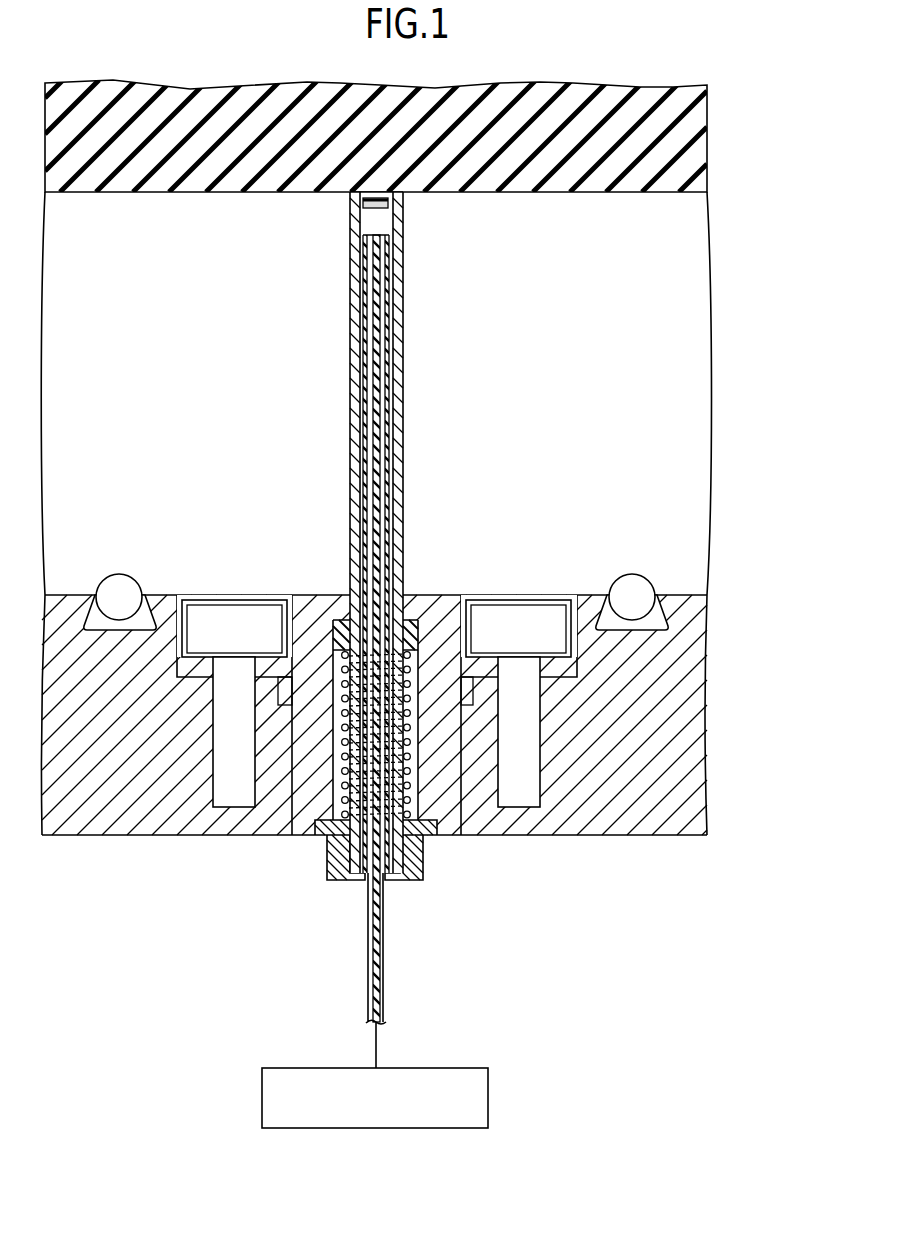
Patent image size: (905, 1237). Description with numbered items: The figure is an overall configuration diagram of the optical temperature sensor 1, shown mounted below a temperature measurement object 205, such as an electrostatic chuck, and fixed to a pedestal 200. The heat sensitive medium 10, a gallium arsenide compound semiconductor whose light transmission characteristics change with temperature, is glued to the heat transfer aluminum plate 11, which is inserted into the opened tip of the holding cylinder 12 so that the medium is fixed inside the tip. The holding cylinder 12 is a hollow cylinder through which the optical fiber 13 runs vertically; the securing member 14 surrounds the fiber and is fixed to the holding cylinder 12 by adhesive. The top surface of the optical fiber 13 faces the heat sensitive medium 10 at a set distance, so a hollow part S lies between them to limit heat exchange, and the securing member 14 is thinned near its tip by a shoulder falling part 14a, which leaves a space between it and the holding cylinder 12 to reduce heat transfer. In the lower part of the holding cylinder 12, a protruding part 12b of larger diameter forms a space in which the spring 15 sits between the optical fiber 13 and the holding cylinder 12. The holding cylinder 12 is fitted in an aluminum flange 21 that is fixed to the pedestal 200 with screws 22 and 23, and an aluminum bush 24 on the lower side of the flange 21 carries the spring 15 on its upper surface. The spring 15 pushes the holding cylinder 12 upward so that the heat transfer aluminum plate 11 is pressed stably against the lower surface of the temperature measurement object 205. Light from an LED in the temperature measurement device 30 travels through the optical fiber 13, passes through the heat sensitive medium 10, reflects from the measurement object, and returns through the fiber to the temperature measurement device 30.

The optical temperature sensor 1 is at (357, 630).
The heat sensitive medium 10 is at (391, 630).
The heat transfer aluminum plate 11 is at (358, 196).
The holding cylinder 12 is at (403, 384).
The protruding part 12b is at (412, 610).
The optical fiber 13 is at (385, 1002).
The securing member 14 is at (387, 300).
The shoulder falling part 14a is at (380, 273).
The spring 15 is at (322, 821).
The flange 21 is at (312, 612).
The screw 22 is at (513, 612).
The screw 23 is at (233, 612).
The bush 24 is at (423, 858).
The temperature measurement device 30 is at (488, 1098).
The pedestal 200 is at (700, 743).
The temperature measurement object 205 is at (700, 143).
The hollow part S is at (377, 225).